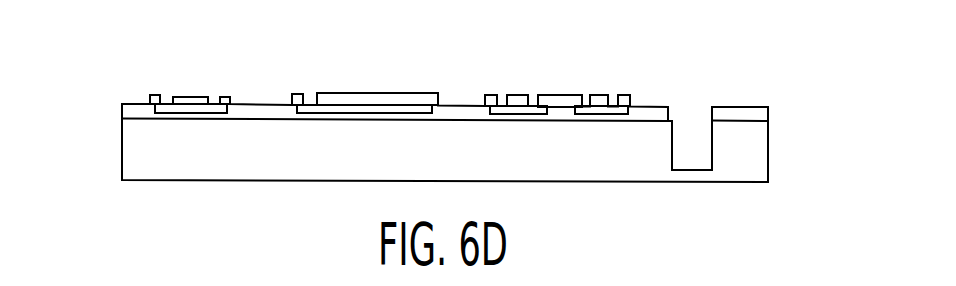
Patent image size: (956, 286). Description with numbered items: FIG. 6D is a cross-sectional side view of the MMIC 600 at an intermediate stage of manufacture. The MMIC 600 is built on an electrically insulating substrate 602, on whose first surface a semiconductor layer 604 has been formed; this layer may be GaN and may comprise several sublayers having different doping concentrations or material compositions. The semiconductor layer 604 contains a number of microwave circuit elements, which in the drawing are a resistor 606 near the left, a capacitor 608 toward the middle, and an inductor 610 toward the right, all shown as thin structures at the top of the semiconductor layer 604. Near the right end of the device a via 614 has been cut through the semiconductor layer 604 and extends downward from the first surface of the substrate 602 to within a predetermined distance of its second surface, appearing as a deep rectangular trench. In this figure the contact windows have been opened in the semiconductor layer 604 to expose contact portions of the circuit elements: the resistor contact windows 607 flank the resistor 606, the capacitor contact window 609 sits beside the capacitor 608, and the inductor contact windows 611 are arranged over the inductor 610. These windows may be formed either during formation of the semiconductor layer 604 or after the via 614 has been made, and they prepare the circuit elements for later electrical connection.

The MMIC 600 is at (85, 144).
The electrically insulating substrate 602 is at (772, 155).
The semiconductor layer 604 is at (772, 117).
The resistor 606 is at (153, 103).
The resistor contact windows 607 is at (215, 97).
The capacitor 608 is at (377, 109).
The capacitor contact window 609 is at (313, 96).
The inductor 610 is at (560, 108).
The inductor contact windows 611 is at (613, 97).
The via 614 is at (695, 138).